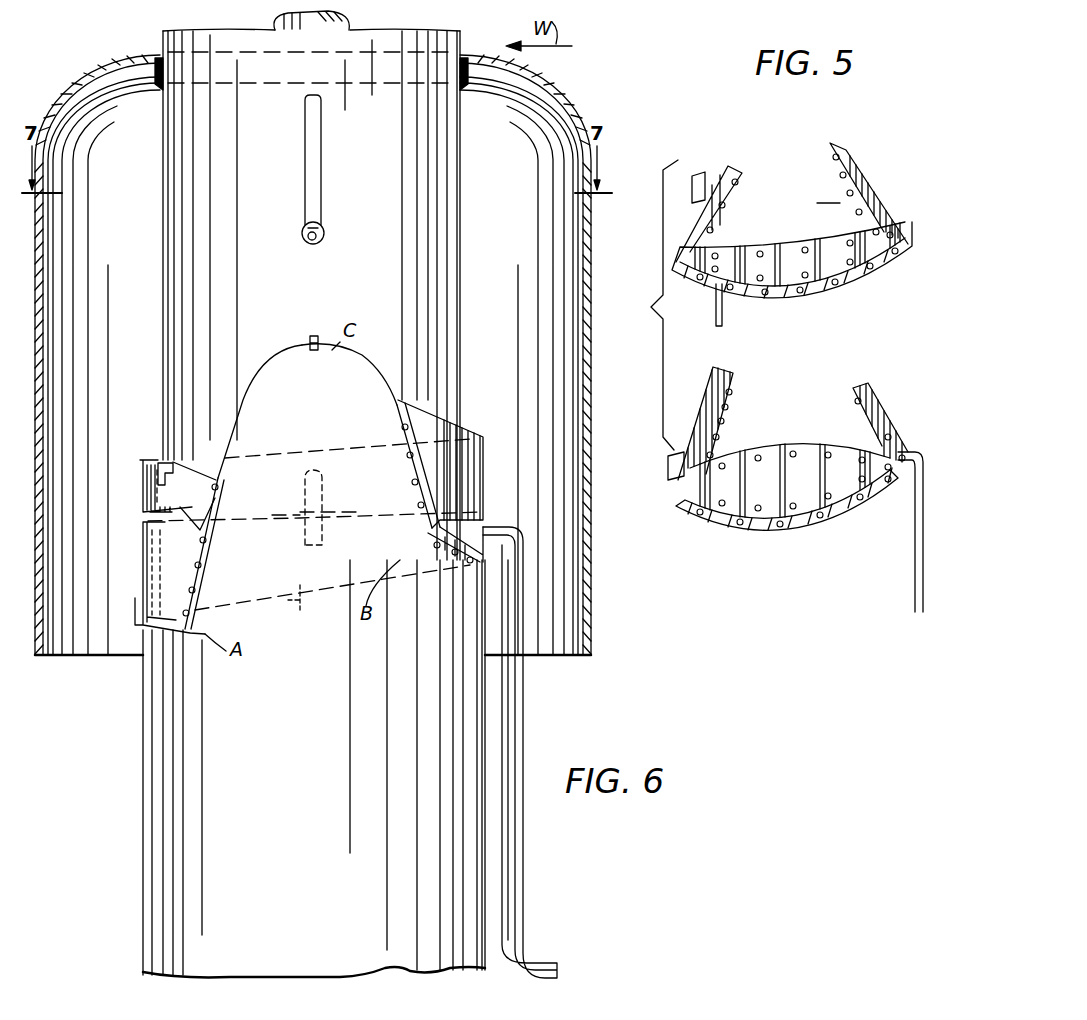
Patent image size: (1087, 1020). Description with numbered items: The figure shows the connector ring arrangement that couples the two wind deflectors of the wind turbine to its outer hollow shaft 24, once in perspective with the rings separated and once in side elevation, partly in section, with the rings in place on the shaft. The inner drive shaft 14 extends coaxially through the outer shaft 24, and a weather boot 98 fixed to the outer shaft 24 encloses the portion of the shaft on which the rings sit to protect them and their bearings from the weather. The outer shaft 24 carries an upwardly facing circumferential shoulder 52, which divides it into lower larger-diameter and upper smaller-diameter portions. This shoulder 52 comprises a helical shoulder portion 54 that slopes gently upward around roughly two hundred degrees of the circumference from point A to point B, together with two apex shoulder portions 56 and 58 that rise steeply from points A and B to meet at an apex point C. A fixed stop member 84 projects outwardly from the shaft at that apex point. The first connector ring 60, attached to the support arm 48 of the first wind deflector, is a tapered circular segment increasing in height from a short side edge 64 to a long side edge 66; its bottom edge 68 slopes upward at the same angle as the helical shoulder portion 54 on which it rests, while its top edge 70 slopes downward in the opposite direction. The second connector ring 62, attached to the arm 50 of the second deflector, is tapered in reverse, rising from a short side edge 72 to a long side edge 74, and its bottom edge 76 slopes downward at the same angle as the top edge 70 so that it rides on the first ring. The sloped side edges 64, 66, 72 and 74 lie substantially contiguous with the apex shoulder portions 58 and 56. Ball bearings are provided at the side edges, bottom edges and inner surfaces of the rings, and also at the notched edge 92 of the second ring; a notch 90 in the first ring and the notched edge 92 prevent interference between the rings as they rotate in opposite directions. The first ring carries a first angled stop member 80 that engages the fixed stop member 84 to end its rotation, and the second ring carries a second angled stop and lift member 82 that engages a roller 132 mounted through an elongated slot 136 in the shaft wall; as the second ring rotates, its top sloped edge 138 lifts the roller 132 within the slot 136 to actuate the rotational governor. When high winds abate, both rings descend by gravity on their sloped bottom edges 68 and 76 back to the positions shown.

In FIG. 6, the inner drive shaft 14 is at (355, 26).
In FIG. 6, the outer hollow shaft 24 is at (460, 188).
In FIG. 6, the arm 48 is at (523, 690).
In FIG. 5, the arm 48 is at (912, 585).
In FIG. 5, the arm 50 is at (722, 310).
In FIG. 6, the shoulder 52 is at (205, 622).
In FIG. 6, the helical shoulder portion 54 is at (300, 612).
In FIG. 6, the apex shoulder portion 56 is at (243, 400).
In FIG. 6, the apex shoulder portion 58 is at (393, 383).
In FIG. 6, the first connector ring 60 is at (140, 580).
In FIG. 5, the first connector ring 60 is at (770, 463).
In FIG. 6, the second connector ring 62 is at (140, 497).
In FIG. 5, the second connector ring 62 is at (792, 228).
In FIG. 6, the short side edge 64 is at (430, 526).
In FIG. 5, the short side edge 64 is at (858, 390).
In FIG. 6, the long side edge 66 is at (195, 585).
In FIG. 5, the long side edge 66 is at (728, 413).
In FIG. 6, the bottom edge 68 is at (320, 590).
In FIG. 5, the bottom edge 68 is at (818, 530).
In FIG. 6, the top edge 70 is at (275, 535).
In FIG. 5, the top edge 70 is at (828, 452).
In FIG. 6, the short side edge 72 is at (220, 479).
In FIG. 5, the short side edge 72 is at (738, 172).
In FIG. 6, the long side edge 74 is at (402, 462).
In FIG. 5, the long side edge 74 is at (848, 160).
In FIG. 6, the bottom edge 76 is at (356, 514).
In FIG. 5, the bottom edge 76 is at (823, 298).
In FIG. 5, the first angled stop member 80 is at (670, 478).
In FIG. 6, the second angled stop and lift member 82 is at (158, 462).
In FIG. 5, the second angled stop and lift member 82 is at (700, 176).
In FIG. 6, the fixed stop member 84 is at (310, 338).
In FIG. 6, the notch 90 is at (205, 520).
In FIG. 5, the notch 90 is at (728, 375).
In FIG. 6, the notched edge 92 is at (460, 500).
In FIG. 5, the notched edge 92 is at (818, 217).
In FIG. 6, the weather boot 98 is at (604, 338).
In FIG. 6, the roller 132 is at (313, 252).
In FIG. 6, the elongated slot 136 is at (309, 175).
In FIG. 6, the top sloped edge 138 is at (318, 443).
In FIG. 5, the top sloped edge 138 is at (768, 247).